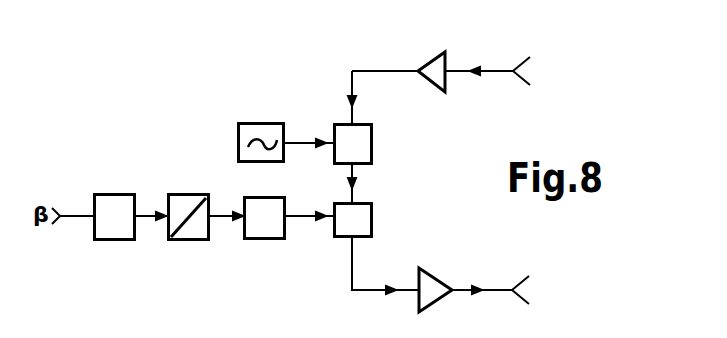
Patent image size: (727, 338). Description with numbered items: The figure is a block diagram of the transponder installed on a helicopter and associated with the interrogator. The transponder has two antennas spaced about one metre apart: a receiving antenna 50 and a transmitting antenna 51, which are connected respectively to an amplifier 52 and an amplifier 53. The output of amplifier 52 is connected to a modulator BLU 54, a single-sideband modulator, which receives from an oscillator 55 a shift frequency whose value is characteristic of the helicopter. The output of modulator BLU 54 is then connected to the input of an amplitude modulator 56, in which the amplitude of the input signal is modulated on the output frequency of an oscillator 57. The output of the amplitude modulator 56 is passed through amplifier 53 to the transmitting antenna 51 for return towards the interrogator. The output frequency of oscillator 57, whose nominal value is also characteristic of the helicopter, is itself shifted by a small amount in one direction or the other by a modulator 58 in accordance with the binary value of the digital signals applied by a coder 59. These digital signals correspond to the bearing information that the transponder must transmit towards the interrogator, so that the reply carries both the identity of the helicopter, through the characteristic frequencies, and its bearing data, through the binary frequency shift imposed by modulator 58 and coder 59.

The receiving antenna 50 is at (521, 63).
The transmitting antenna 51 is at (519, 279).
The amplifier 52 is at (431, 65).
The amplifier 53 is at (431, 281).
The modulator BLU 54 is at (367, 136).
The oscillator 55 is at (263, 133).
The amplitude modulator 56 is at (364, 222).
The oscillator 57 is at (268, 236).
The modulator 58 is at (190, 228).
The coder 59 is at (112, 232).